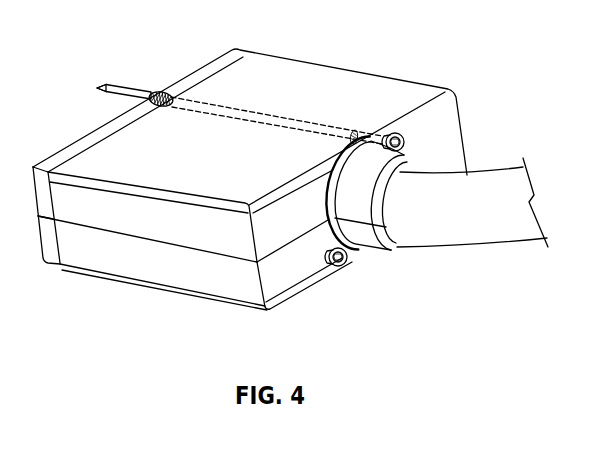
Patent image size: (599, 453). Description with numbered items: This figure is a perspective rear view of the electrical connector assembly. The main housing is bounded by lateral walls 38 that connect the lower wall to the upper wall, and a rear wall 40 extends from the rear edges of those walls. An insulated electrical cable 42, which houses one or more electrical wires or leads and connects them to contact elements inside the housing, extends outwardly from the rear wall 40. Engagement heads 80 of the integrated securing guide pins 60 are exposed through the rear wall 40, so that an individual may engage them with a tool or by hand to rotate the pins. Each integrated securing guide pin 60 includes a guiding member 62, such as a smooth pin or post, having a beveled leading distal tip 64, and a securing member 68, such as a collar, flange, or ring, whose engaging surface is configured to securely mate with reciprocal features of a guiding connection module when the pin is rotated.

The lateral walls 38 is at (339, 68).
The rear wall 40 is at (413, 166).
The insulated electrical cable 42 is at (497, 254).
The integrated securing guide pin 60 is at (102, 66).
The guiding member 62 is at (118, 84).
The beveled leading distal tip 64 is at (100, 86).
The securing member 68 is at (159, 93).
The engagement heads 80 is at (405, 138).